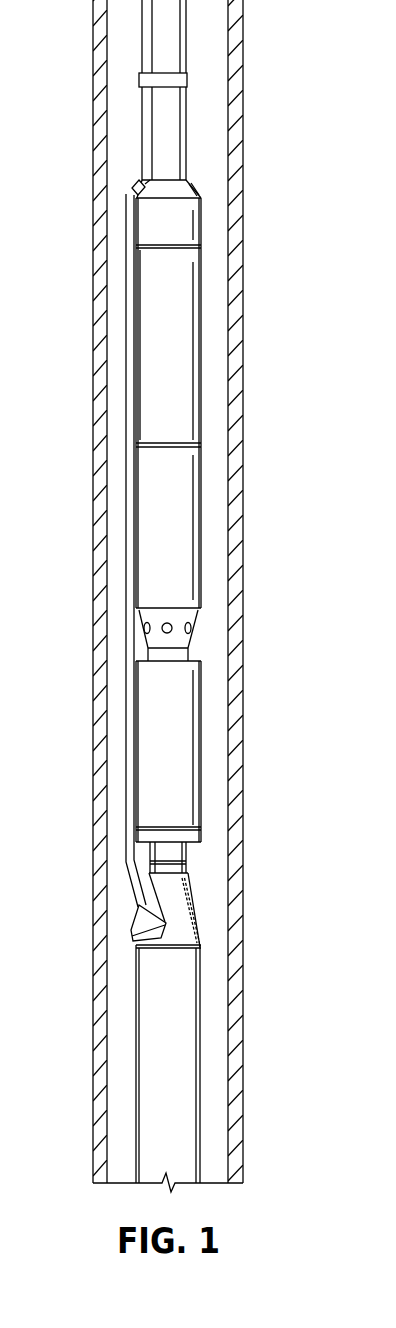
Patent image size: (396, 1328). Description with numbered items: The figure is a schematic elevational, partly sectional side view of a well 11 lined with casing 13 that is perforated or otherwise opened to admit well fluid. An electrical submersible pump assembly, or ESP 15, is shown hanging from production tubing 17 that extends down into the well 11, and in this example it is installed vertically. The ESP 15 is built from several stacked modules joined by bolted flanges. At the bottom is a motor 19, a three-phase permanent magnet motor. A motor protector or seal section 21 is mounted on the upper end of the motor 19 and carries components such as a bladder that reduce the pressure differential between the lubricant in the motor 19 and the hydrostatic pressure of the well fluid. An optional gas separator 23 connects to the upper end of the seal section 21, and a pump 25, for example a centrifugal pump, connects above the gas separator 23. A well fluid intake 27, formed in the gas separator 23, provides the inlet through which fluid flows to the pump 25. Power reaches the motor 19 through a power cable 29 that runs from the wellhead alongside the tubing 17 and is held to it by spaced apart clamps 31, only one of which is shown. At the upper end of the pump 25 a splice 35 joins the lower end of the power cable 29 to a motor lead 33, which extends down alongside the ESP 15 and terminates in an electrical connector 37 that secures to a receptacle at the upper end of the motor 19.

The well 11 is at (217, 37).
The casing 13 is at (237, 182).
The electrical submersible pump assembly 15 is at (174, 520).
The production tubing 17 is at (172, 116).
The motor 19 is at (180, 980).
The seal section 21 is at (178, 773).
The gas separator 23 is at (183, 488).
The pump 25 is at (187, 265).
The well fluid intake 27 is at (160, 623).
The power cable 29 is at (138, 180).
The clamp 31 is at (139, 77).
The motor lead 33 is at (150, 328).
The splice 35 is at (131, 188).
The electrical connector 37 is at (133, 918).